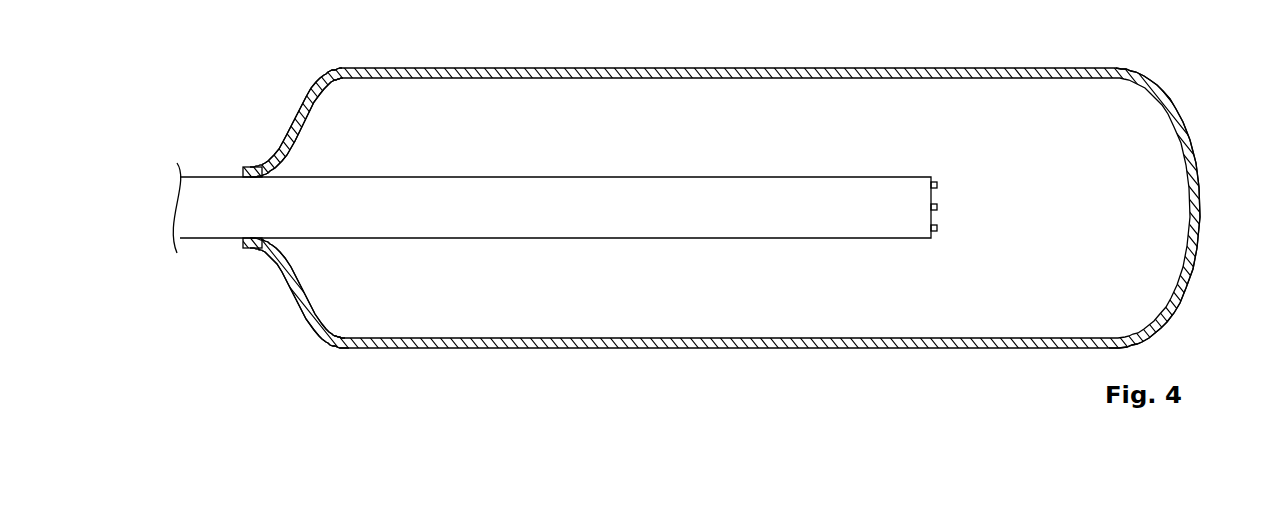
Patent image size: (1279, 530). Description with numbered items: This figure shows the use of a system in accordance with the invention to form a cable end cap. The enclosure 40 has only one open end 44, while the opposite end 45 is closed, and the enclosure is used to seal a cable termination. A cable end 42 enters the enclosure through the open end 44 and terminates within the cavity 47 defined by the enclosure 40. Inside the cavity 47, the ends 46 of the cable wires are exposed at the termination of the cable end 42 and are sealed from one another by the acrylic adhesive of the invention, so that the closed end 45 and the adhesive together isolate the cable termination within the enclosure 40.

The enclosure 40 is at (735, 68).
The cable end 42 is at (590, 225).
The open end 44 is at (249, 167).
The closed end 45 is at (1200, 206).
The ends of the cable wires 46 is at (937, 185).
The cavity 47 is at (701, 134).